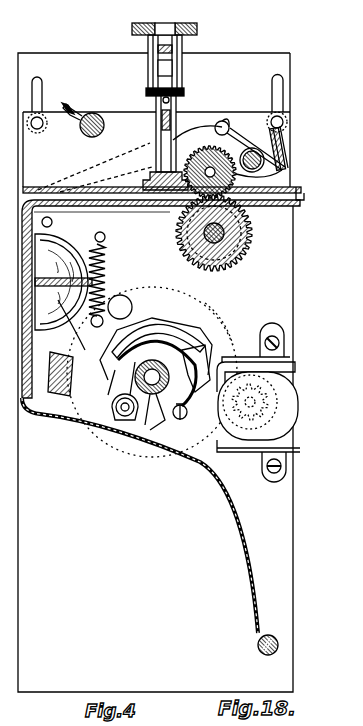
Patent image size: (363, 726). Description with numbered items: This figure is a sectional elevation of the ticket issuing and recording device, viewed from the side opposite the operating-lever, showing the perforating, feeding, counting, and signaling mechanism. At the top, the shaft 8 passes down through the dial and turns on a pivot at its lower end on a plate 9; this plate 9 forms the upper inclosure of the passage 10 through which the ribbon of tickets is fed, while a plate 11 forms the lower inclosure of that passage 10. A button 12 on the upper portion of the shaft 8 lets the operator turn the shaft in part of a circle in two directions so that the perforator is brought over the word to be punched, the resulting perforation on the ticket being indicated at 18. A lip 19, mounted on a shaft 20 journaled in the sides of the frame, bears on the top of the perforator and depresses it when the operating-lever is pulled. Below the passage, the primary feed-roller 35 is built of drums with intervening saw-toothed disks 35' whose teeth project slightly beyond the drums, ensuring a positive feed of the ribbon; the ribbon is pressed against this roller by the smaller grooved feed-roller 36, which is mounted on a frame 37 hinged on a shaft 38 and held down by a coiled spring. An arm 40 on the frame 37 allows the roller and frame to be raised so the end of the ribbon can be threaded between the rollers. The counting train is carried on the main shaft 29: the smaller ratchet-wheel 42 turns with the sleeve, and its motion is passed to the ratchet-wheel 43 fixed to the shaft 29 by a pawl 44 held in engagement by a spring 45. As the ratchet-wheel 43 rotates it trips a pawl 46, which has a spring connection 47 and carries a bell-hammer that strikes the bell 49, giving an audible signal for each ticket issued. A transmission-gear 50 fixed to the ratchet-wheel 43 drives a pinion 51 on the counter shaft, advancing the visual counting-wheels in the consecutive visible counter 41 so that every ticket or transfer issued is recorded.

The shaft 8 is at (155, 120).
The plate 9 is at (40, 190).
The passage 10 is at (140, 206).
The plate 11 is at (300, 206).
The button 12 is at (199, 30).
The perforation 18 is at (53, 382).
The lip 19 is at (72, 112).
The shaft 20 is at (100, 116).
The main shaft 29 is at (150, 384).
The primary feed-roller 35 is at (223, 208).
The saw-toothed disks 35' is at (214, 252).
The smaller feed-roller 36 is at (210, 150).
The frame 37 is at (250, 138).
The shaft 38 is at (265, 160).
The arm 40 is at (92, 165).
The consecutive visible counter 41 is at (262, 398).
The smaller ratchet-wheel 42 is at (158, 410).
The ratchet-wheel 43 is at (128, 346).
The pawl 44 is at (112, 398).
The spring 45 is at (178, 334).
The pawl 46 is at (164, 305).
The spring connection 47 is at (106, 267).
The bell 49 is at (57, 224).
The transmission-gear 50 is at (228, 336).
The pinion 51 is at (250, 416).